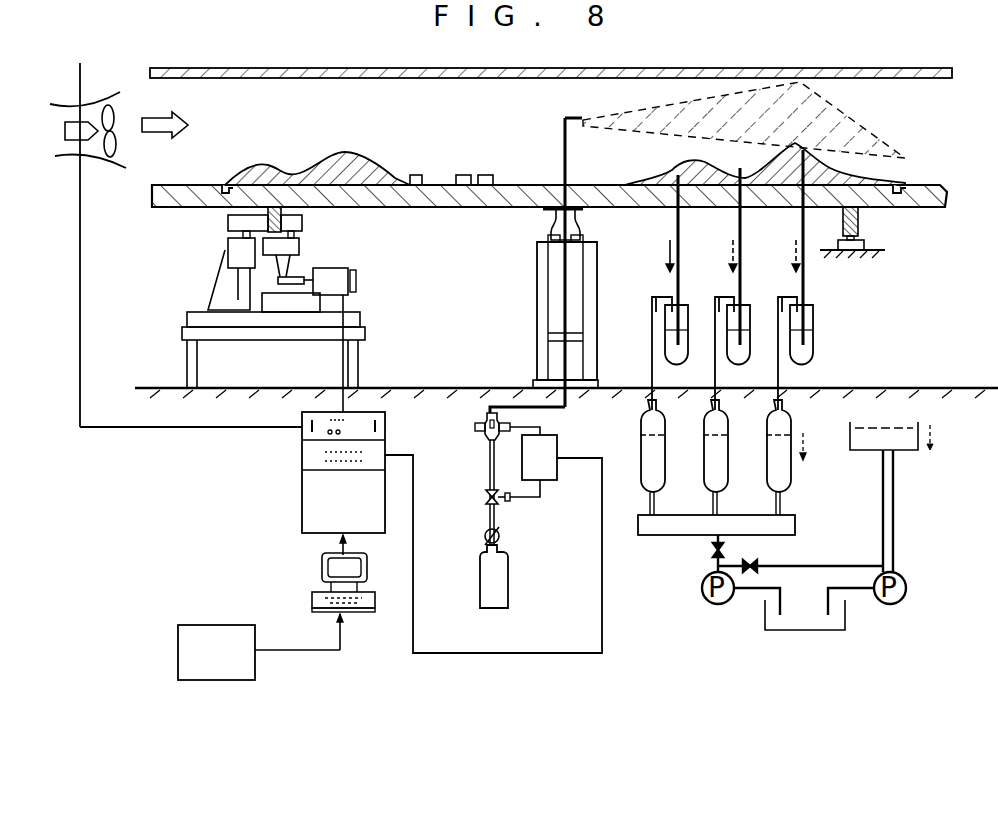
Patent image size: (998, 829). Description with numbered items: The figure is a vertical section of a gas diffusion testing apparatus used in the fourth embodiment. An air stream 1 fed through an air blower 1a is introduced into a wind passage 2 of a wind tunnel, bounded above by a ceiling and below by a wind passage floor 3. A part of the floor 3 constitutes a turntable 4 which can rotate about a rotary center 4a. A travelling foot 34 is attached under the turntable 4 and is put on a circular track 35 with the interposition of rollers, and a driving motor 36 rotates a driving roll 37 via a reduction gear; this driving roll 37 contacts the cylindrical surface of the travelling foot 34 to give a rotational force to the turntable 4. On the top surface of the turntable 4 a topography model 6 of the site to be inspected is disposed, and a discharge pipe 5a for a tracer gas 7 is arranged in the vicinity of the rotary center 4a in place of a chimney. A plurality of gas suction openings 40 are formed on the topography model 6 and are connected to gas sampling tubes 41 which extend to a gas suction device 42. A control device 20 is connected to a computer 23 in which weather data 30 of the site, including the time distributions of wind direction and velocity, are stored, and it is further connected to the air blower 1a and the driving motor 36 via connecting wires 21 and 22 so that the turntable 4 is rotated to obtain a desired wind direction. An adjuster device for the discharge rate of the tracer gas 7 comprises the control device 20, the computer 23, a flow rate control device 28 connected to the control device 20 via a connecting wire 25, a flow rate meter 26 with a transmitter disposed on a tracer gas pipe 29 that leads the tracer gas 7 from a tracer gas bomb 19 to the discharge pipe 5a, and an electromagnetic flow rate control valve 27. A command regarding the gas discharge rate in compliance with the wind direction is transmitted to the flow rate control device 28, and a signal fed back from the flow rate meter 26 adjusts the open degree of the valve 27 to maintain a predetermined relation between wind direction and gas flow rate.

The air blower 1a is at (88, 230).
The air stream 1 is at (165, 115).
The wind passage 2 is at (313, 120).
The wind passage floor 3 is at (928, 185).
The turntable 4 is at (492, 208).
The rotary center 4a is at (578, 222).
The discharge pipe 5a is at (562, 160).
The topography model 6 is at (835, 170).
The tracer gas 7 is at (658, 100).
The tracer gas bomb 19 is at (510, 582).
The control device 20 is at (300, 458).
The connecting wire 21 is at (160, 432).
The connecting wire 22 is at (345, 362).
The computer 23 is at (312, 600).
The connecting wire 25 is at (508, 653).
The flow rate meter 26 is at (484, 434).
The electromagnetic flow rate control valve 27 is at (486, 498).
The flow rate control device 28 is at (558, 450).
The tracer gas pipe 29 is at (495, 405).
The weather data 30 is at (211, 625).
The travelling foot 34 is at (862, 222).
The circular track 35 is at (858, 252).
The driving motor 36 is at (340, 268).
The driving roll 37 is at (303, 223).
The gas suction openings 40 is at (680, 172).
The gas sampling tubes 41 is at (812, 347).
The gas suction device 42 is at (668, 538).